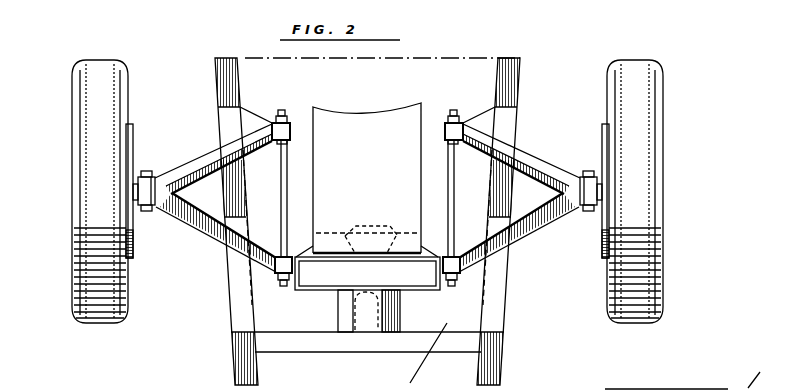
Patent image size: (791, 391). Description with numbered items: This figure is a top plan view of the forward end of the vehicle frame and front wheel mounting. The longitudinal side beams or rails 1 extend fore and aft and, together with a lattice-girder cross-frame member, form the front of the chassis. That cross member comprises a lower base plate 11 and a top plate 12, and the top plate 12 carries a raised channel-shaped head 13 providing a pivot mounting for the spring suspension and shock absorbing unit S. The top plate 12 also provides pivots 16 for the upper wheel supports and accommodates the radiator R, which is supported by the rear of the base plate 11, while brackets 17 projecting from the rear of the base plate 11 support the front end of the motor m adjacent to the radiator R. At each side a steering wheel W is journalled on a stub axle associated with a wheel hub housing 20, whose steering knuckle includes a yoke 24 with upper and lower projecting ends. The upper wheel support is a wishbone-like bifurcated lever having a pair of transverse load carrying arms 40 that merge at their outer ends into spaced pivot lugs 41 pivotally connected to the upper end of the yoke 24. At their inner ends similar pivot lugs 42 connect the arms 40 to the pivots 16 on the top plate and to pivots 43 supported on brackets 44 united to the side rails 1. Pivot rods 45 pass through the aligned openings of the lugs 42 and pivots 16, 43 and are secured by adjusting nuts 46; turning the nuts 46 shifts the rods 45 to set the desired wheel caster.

The longitudinal side beams or rails 1 is at (245, 82).
The lower base plate 11 is at (303, 250).
The top plate 12 is at (260, 318).
The raised channel-shaped head 13 is at (392, 342).
The pivots for the upper wheel supports 16 is at (253, 268).
The brackets 17 is at (353, 244).
The wheel hub housing 20 is at (134, 133).
The yoke 24 is at (158, 188).
The transverse load carrying arms 40 is at (210, 153).
The pivot lugs 41 is at (148, 172).
The pivot lugs 42 is at (292, 129).
The pivots 43 is at (292, 143).
The brackets 44 is at (247, 119).
The pivot rods 45 is at (289, 178).
The adjusting nuts 46 is at (290, 117).
The steering wheels W is at (97, 152).
The motor m is at (382, 115).
The radiator R is at (367, 273).
The spring suspension and shock absorbing unit S is at (367, 323).